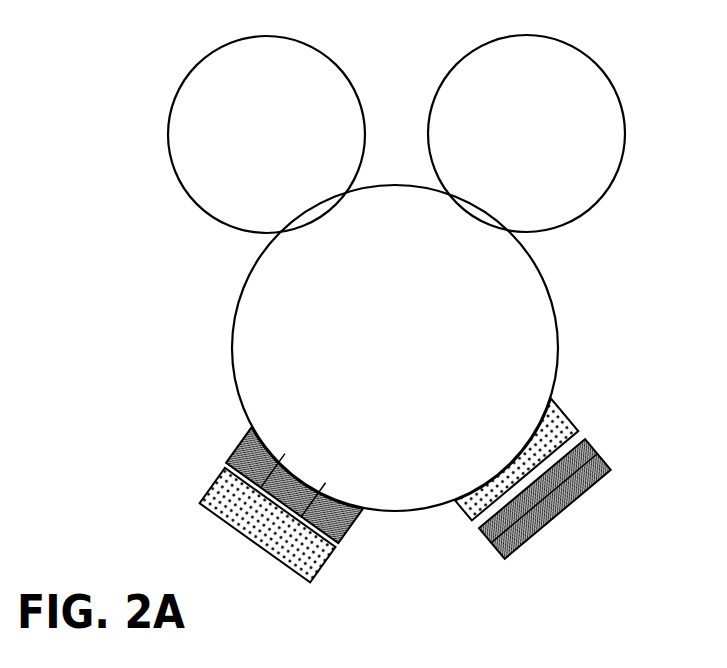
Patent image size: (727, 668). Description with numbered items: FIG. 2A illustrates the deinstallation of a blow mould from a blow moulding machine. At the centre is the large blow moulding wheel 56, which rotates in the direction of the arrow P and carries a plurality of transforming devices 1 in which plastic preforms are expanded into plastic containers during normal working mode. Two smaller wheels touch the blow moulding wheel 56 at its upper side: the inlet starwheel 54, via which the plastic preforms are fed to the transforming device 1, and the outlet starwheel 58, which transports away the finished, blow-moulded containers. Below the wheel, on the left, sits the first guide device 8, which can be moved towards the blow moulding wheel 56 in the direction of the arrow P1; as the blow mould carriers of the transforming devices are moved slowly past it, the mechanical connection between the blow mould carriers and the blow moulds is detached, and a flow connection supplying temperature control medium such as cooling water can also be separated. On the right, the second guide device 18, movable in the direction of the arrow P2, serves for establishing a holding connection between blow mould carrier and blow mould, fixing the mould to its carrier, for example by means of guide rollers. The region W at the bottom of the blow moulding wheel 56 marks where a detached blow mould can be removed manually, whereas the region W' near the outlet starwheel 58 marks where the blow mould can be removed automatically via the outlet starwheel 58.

The transforming device 1 is at (215, 365).
The first guide device 8 is at (247, 433).
The second guide device 18 is at (552, 508).
The inlet starwheel 54 is at (215, 164).
The blow moulding wheel 56 is at (277, 340).
The outlet starwheel 58 is at (547, 175).
The manual removal region W is at (449, 569).
The automatic removal region W' is at (551, 277).
The rotation of the blow moulding wheel P is at (500, 449).
The movement direction of the first guide device P1 is at (223, 443).
The movement direction of the second guide device P2 is at (582, 405).